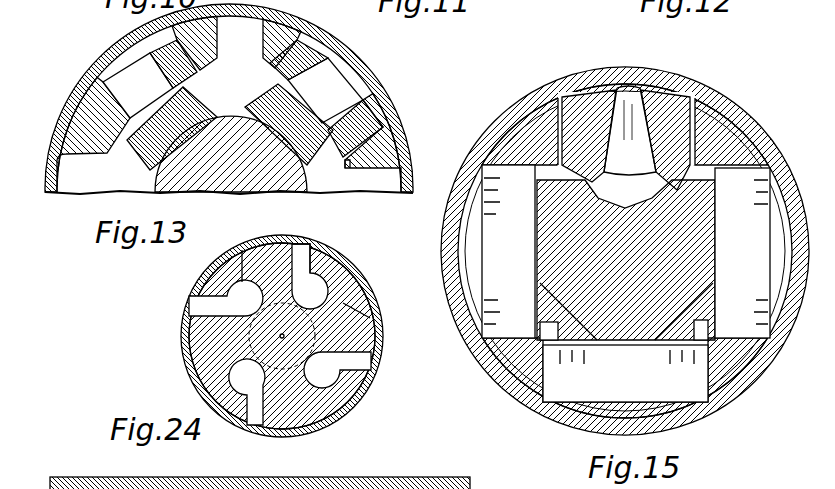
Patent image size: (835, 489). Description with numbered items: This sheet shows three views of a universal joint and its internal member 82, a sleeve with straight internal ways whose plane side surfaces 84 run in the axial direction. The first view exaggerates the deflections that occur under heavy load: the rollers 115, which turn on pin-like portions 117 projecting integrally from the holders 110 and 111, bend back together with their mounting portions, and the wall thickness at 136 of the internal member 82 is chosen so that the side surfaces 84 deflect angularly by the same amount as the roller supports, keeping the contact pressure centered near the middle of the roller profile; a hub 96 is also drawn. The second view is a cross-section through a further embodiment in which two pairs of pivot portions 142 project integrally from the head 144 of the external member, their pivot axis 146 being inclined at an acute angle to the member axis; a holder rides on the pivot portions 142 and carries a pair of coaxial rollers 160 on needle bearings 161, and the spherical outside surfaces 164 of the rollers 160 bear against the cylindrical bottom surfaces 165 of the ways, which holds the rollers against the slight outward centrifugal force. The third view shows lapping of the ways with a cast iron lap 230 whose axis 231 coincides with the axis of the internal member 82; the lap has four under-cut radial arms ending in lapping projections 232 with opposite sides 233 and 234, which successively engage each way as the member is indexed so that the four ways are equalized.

In FIG. 13, the internal member 82 is at (392, 160).
In FIG. 24, the internal member 82 is at (345, 270).
In FIG. 13, the side surfaces of the ways 84 is at (348, 167).
In FIG. 24, the side surfaces of the ways 84 is at (310, 246).
In FIG. 13, the rotor hub 96 is at (219, 147).
In FIG. 13, the holder 110 is at (318, 152).
In FIG. 13, the holder 111 is at (150, 152).
In FIG. 13, the rollers 115 is at (157, 52).
In FIG. 13, the pin-like portions 117 is at (122, 80).
In FIG. 13, the wall thickness 136 is at (362, 84).
In FIG. 15, the pivot portions 142 is at (622, 115).
In FIG. 15, the head 144 is at (619, 315).
In FIG. 24, the pivot axis 146 is at (430, 474).
In FIG. 15, the rollers 160 is at (712, 120).
In FIG. 15, the needle bearings 161 is at (560, 110).
In FIG. 15, the spherical outside surfaces 164 is at (462, 280).
In FIG. 15, the cylindrical bottom surfaces 165 is at (462, 252).
In FIG. 24, the lap 230 is at (273, 292).
In FIG. 24, the axis of the lap 231 is at (285, 336).
In FIG. 24, the lapping projections 232 is at (362, 320).
In FIG. 24, the side of lapping projection 233 is at (236, 266).
In FIG. 24, the side of lapping projection 234 is at (312, 255).